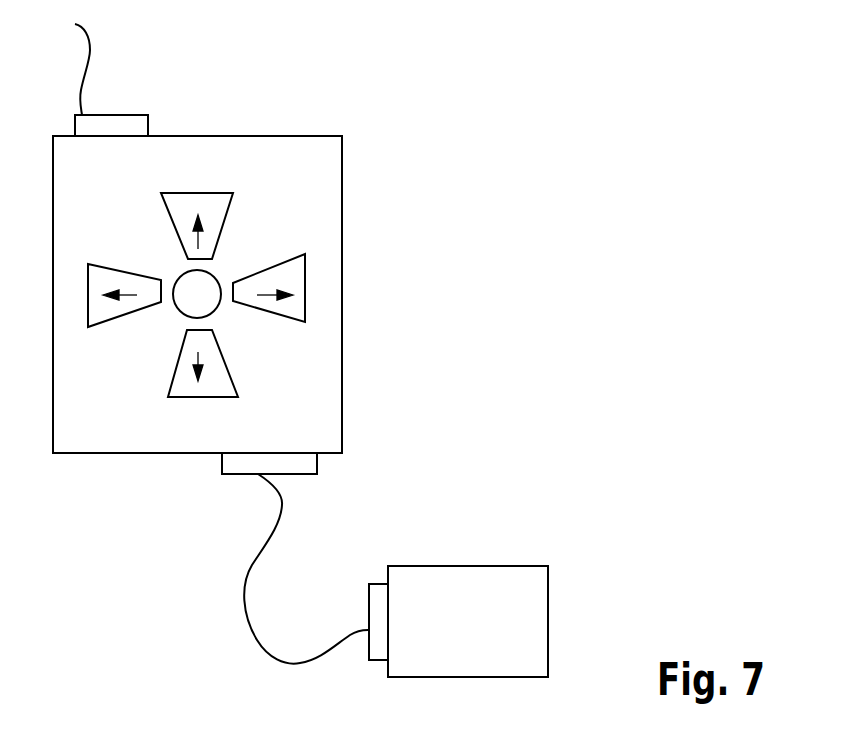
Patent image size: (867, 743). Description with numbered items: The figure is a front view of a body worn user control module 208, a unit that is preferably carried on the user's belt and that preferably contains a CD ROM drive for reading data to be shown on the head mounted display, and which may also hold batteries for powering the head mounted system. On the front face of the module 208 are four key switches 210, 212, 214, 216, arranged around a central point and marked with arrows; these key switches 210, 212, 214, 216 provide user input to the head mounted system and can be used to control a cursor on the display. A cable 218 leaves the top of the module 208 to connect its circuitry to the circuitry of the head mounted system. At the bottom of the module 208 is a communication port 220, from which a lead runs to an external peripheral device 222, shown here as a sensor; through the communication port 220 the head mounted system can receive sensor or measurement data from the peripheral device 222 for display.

The body worn user control module 208 is at (342, 275).
The key switch 210 is at (226, 221).
The key switch 212 is at (242, 307).
The key switch 214 is at (177, 372).
The key switch 216 is at (150, 277).
The cable 218 is at (90, 50).
The communication port 220 is at (317, 468).
The external peripheral device 222 is at (548, 593).